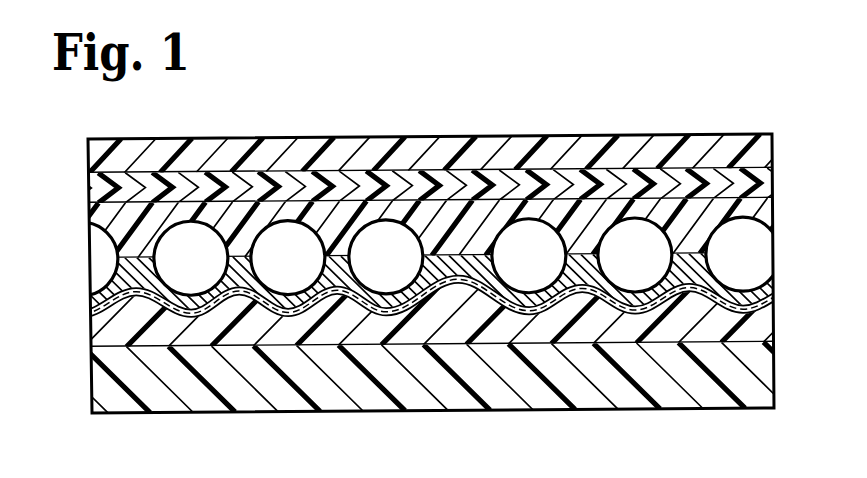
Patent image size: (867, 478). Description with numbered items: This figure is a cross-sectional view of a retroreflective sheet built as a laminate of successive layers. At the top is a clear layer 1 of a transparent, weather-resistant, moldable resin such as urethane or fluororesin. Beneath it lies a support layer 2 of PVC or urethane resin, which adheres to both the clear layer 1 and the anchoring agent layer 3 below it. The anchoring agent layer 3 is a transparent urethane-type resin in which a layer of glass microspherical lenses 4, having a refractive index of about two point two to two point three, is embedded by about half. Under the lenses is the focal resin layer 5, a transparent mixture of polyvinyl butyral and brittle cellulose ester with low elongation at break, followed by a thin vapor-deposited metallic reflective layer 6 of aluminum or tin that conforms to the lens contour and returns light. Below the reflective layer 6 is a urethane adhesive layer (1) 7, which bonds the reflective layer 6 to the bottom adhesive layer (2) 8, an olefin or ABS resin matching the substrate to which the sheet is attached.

The clear layer 1 is at (97, 155).
The support layer 2 is at (97, 188).
The anchoring agent layer 3 is at (100, 217).
The microspherical lens 4 is at (382, 233).
The focal resin layer 5 is at (92, 302).
The metallic reflective layer 6 is at (97, 310).
The adhesive layer (1) 7 is at (105, 333).
The adhesive layer (2) 8 is at (103, 387).